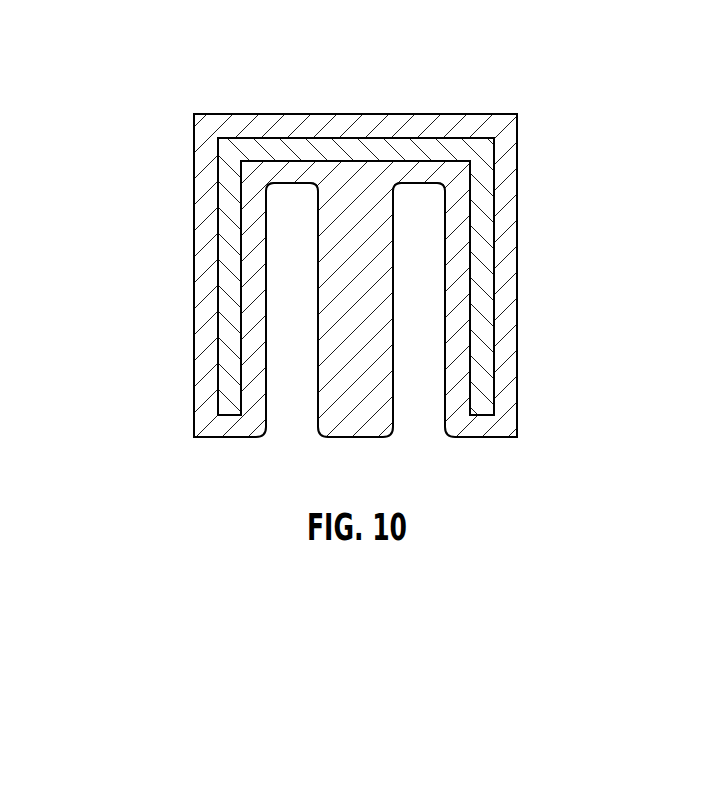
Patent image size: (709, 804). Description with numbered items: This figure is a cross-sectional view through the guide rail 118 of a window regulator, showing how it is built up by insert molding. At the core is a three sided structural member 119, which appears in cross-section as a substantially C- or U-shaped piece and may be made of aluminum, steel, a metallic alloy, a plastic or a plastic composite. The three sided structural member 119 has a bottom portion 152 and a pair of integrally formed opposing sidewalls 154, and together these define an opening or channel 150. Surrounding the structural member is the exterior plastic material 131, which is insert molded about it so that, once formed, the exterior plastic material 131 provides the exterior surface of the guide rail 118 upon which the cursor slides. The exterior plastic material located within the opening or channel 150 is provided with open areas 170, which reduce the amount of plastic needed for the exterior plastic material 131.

The guide rail 118 is at (525, 177).
The three sided structural member 119 is at (496, 149).
The bottom portion 152 is at (347, 148).
The opening or channel 150 is at (472, 247).
The opposing sidewalls 154 is at (225, 330).
The open areas 170 is at (287, 282).
The exterior plastic material 131 is at (507, 427).